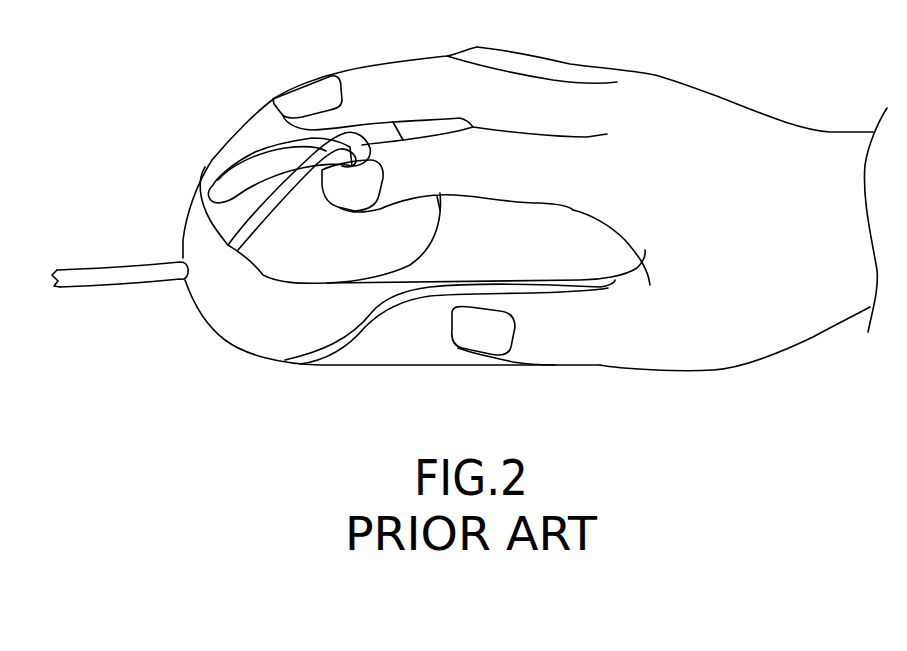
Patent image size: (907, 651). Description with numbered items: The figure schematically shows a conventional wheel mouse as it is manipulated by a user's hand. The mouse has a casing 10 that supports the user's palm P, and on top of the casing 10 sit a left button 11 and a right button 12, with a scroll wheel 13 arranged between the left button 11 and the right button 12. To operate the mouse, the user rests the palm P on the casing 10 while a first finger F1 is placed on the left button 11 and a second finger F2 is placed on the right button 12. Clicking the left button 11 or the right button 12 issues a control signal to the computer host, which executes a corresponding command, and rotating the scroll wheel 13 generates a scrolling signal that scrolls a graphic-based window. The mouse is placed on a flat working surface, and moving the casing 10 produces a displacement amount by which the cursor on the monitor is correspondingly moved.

The casing 10 is at (540, 237).
The left button 11 is at (305, 248).
The right button 12 is at (265, 130).
The scroll wheel 13 is at (245, 182).
The first finger F1 is at (470, 147).
The second finger F2 is at (413, 78).
The palm P is at (728, 133).